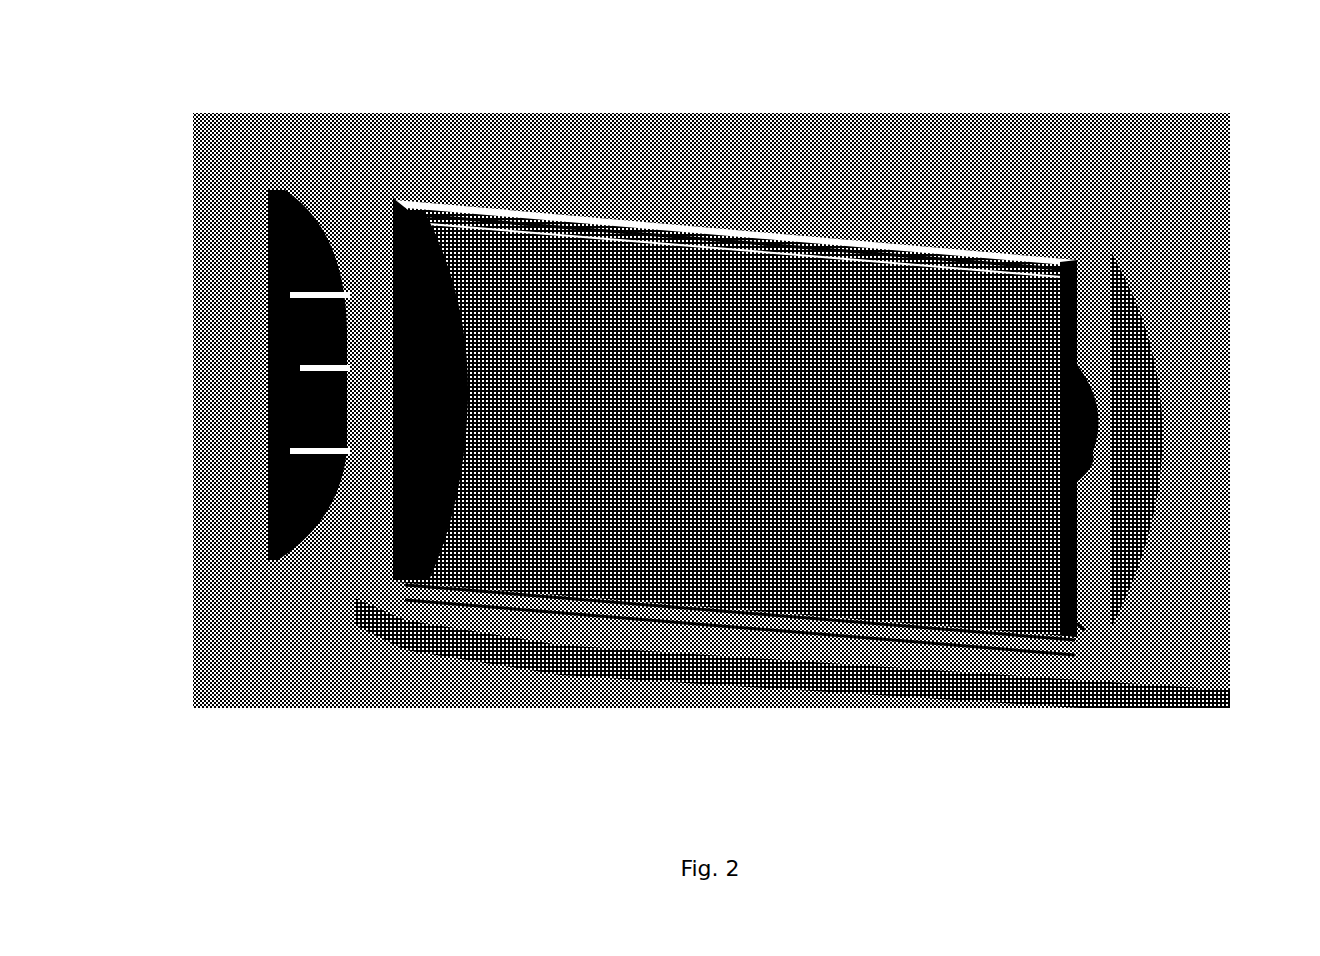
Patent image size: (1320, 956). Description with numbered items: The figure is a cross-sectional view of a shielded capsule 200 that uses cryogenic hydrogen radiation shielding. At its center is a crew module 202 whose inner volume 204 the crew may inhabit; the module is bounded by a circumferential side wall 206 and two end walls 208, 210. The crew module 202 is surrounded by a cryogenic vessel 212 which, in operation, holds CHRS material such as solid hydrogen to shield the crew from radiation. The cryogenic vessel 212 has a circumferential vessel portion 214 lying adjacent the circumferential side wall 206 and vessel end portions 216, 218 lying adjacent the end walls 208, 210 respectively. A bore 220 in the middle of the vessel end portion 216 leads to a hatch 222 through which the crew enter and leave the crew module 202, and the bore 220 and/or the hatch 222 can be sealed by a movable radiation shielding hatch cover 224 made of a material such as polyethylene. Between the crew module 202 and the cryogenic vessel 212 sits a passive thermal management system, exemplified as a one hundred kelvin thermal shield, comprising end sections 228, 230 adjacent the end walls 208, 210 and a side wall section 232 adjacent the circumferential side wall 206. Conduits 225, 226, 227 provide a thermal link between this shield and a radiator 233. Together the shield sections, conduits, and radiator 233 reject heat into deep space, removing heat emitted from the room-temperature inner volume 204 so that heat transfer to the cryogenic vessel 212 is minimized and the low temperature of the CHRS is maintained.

The shielded capsule 200 is at (975, 143).
The crew module 202 is at (742, 232).
The inner volume 204 is at (650, 425).
The circumferential side wall 206 is at (996, 265).
The end wall 208 is at (1068, 565).
The end wall 210 is at (450, 415).
The cryogenic vessel 212 is at (813, 190).
The circumferential vessel portion 214 is at (883, 228).
The vessel end portion 216 is at (1103, 307).
The vessel end portion 218 is at (368, 248).
The bore 220 is at (1138, 400).
The hatch 222 is at (1115, 447).
The radiation shielding hatch cover 224 is at (1105, 482).
The conduit 225 is at (303, 300).
The conduit 226 is at (322, 373).
The conduit 227 is at (337, 460).
The end section 228 is at (1082, 620).
The end section 230 is at (395, 450).
The side wall section 232 is at (630, 222).
The radiator 233 is at (268, 258).